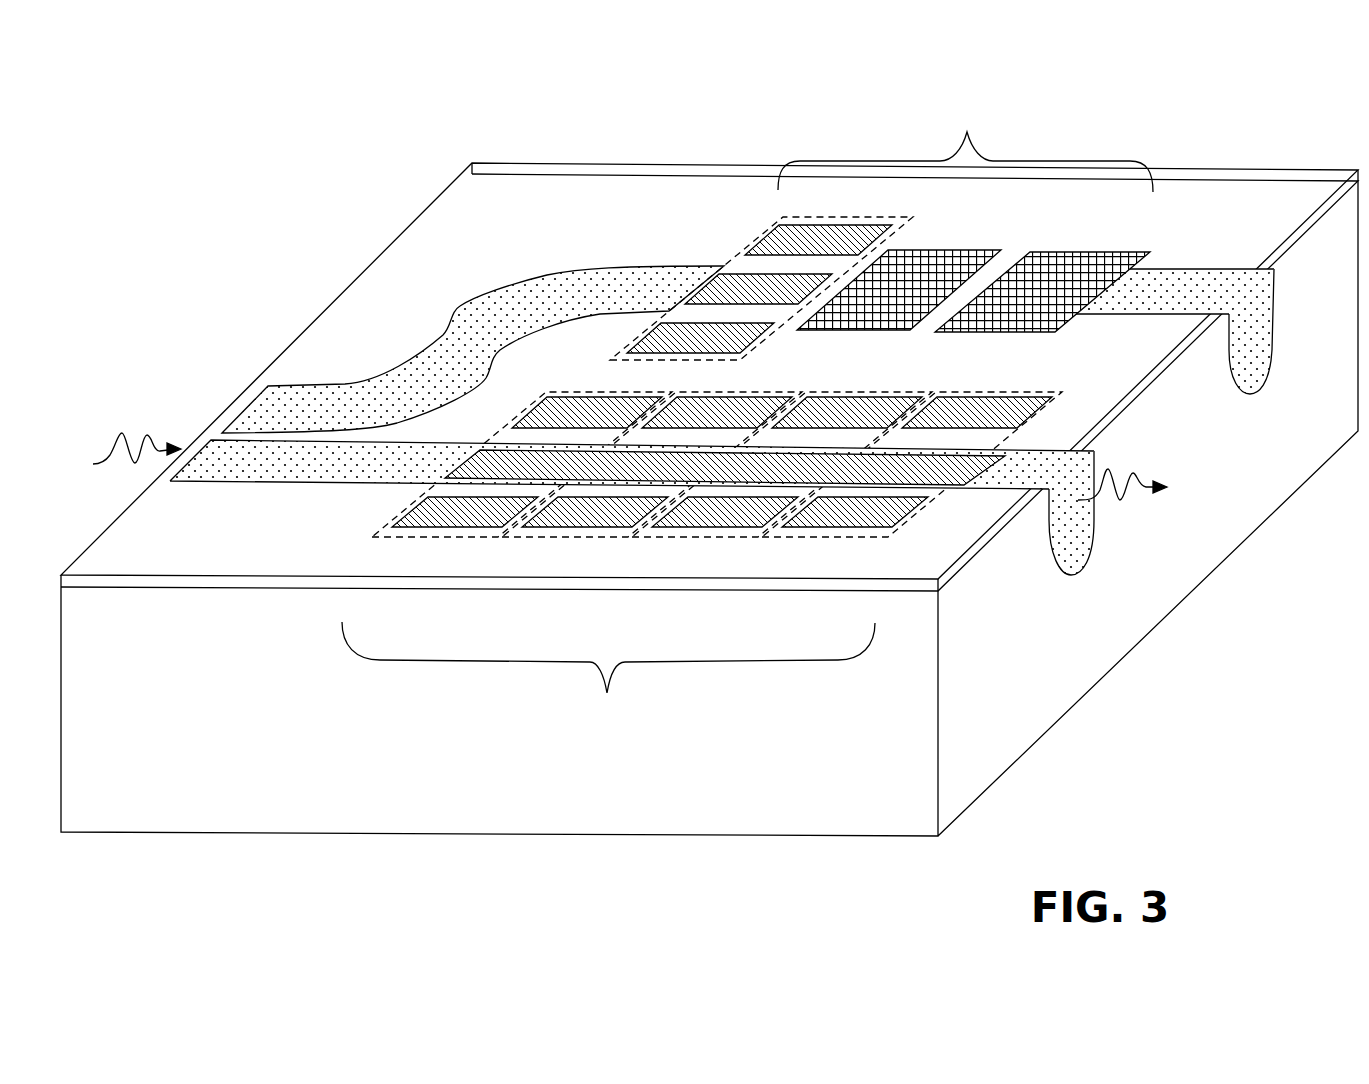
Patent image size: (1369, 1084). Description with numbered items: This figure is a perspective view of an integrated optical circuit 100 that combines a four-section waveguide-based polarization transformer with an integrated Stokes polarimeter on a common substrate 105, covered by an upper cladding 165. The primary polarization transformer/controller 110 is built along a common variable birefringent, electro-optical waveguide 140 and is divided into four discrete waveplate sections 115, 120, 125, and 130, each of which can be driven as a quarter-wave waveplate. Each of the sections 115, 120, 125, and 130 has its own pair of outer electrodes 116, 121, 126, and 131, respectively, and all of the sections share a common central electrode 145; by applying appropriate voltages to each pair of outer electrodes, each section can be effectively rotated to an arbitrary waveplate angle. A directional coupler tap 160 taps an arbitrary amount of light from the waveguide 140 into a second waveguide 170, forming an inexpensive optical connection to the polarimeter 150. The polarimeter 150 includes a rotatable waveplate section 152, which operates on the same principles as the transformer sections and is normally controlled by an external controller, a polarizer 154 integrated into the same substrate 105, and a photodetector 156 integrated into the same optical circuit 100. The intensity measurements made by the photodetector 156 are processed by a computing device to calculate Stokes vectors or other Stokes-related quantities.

The integrated optical circuit 100 is at (329, 208).
The substrate 105 is at (830, 805).
The primary polarization transformer/controller 110 is at (608, 678).
The waveplate section 115 is at (410, 538).
The waveplate section 120 is at (563, 538).
The waveplate section 125 is at (690, 538).
The waveplate section 130 is at (830, 538).
The pair of outer electrodes 116 is at (448, 526).
The pair of outer electrodes 121 is at (578, 526).
The pair of outer electrodes 126 is at (708, 526).
The pair of outer electrodes 131 is at (838, 526).
The common variable birefringent waveguide 140 is at (1076, 500).
The common central electrode 145 is at (458, 462).
The polarimeter 150 is at (965, 149).
The rotatable waveplate section 152 is at (760, 340).
The polarizer 154 is at (865, 332).
The photodetector 156 is at (993, 334).
The directional coupler tap 160 is at (261, 408).
The upper cladding 165 is at (95, 583).
The waveguide 170 is at (1238, 382).